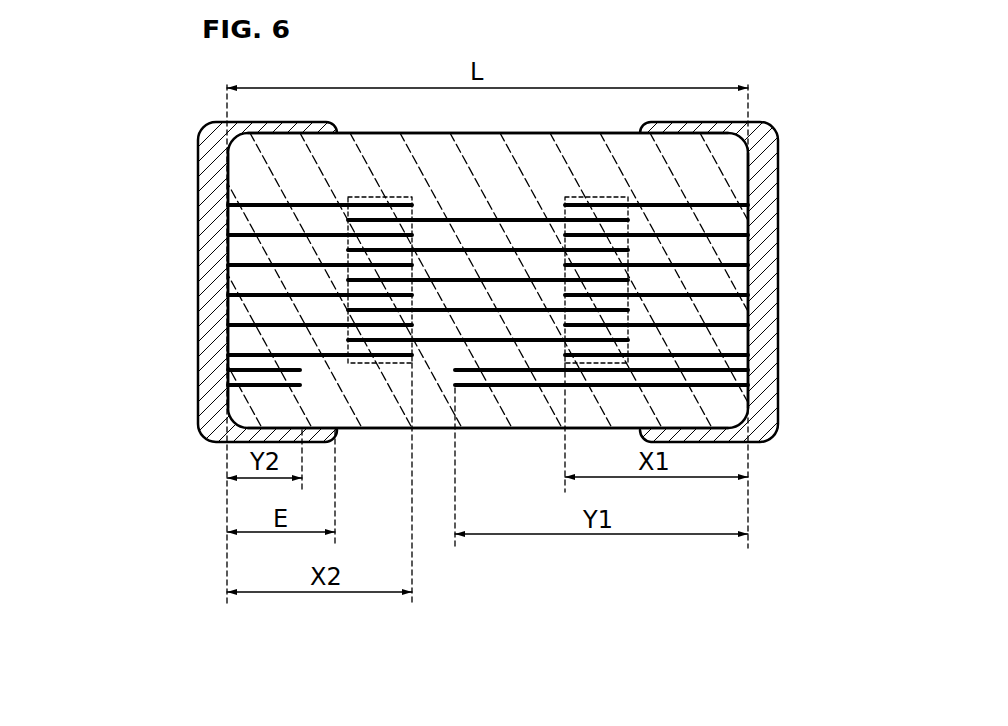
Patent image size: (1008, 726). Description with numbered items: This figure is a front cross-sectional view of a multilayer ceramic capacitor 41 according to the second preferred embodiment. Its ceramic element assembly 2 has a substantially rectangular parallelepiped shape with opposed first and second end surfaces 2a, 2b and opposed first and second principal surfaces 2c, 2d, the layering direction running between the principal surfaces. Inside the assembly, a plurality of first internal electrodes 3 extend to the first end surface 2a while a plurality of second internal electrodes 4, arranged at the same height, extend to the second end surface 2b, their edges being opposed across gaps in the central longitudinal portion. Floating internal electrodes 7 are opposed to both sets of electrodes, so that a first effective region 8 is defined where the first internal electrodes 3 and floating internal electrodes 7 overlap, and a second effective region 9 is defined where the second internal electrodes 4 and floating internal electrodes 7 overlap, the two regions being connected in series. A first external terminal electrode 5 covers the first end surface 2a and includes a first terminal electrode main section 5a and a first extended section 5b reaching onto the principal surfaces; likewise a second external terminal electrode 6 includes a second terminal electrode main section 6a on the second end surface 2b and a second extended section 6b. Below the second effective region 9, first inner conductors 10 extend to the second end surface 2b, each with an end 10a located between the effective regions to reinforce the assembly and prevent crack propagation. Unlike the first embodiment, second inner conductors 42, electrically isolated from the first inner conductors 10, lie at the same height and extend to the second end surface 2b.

The multilayer ceramic capacitor 41 is at (195, 113).
The ceramic element assembly 2 is at (422, 130).
The first end surface 2a is at (738, 190).
The second end surface 2b is at (236, 190).
The first principal surface 2c is at (539, 133).
The second principal surface 2d is at (350, 430).
The first internal electrode 3 is at (738, 230).
The second internal electrode 4 is at (258, 325).
The first external terminal electrode 5 is at (882, 108).
The first terminal electrode main section 5a is at (779, 150).
The first extended section 5b is at (692, 118).
The second external terminal electrode 6 is at (40, 392).
The second terminal electrode main section 6a is at (200, 393).
The second extended section 6b is at (236, 442).
The floating internal electrode 7 is at (428, 343).
The first effective region 8 is at (594, 195).
The second effective region 9 is at (380, 196).
The first inner conductor 10 is at (725, 365).
The end of first inner conductor 10a is at (455, 388).
The second inner conductor 42 is at (240, 372).